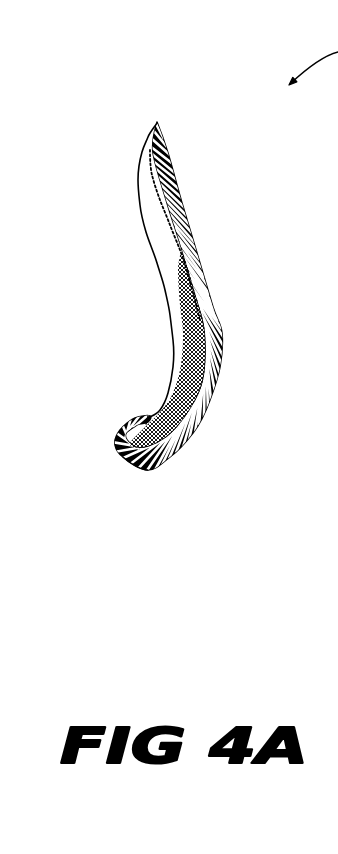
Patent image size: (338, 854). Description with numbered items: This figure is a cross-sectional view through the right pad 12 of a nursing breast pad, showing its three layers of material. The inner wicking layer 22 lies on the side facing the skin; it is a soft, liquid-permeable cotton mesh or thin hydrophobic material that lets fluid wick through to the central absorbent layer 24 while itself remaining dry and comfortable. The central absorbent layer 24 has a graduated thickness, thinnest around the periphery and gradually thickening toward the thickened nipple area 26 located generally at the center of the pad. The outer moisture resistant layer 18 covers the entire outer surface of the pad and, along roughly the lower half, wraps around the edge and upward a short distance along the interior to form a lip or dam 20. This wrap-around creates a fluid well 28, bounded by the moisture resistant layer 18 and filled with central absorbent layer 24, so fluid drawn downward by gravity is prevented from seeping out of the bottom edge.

The right pad 12 is at (188, 113).
The outer moisture resistant layer 18 is at (219, 320).
The lip or dam 20 is at (112, 436).
The inner wicking layer 22 is at (138, 188).
The central absorbent layer 24 is at (160, 235).
The thickened nipple area 26 is at (186, 377).
The fluid well 28 is at (150, 425).